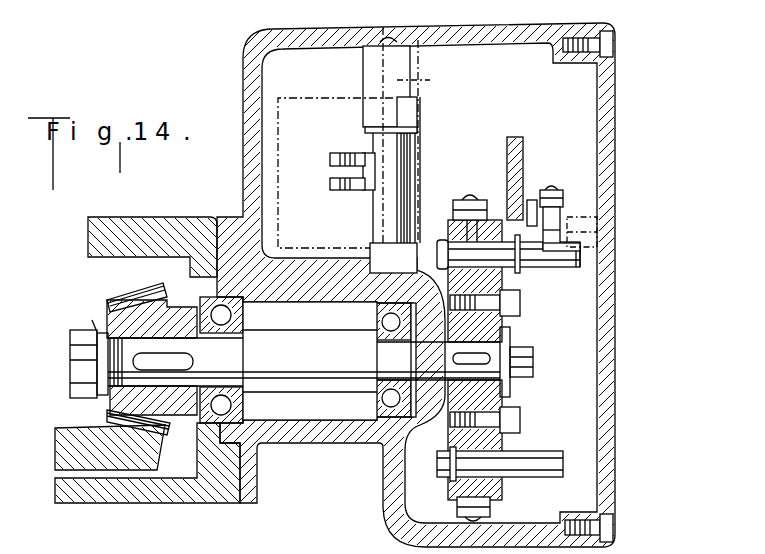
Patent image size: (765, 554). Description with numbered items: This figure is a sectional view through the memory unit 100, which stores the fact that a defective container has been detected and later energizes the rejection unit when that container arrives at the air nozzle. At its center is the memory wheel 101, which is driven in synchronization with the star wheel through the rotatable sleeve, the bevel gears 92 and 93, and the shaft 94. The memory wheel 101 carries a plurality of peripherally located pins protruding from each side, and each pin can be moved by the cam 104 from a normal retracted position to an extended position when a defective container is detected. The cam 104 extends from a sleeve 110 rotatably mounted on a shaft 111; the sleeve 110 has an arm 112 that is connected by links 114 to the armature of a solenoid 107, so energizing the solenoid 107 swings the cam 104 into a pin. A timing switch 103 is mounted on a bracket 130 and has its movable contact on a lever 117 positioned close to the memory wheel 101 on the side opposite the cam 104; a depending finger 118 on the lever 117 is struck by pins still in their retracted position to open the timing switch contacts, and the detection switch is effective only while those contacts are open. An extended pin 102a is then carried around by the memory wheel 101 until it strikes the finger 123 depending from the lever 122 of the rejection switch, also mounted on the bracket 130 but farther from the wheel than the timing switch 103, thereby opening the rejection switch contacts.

The bevel gear 92 is at (63, 430).
The bevel gear 93 is at (121, 299).
The shaft 94 is at (302, 392).
The memory unit 100 is at (645, 157).
The memory wheel 101 is at (502, 498).
The extended pin 102a is at (538, 272).
The timing switch 103 is at (565, 202).
The cam 104 is at (373, 250).
The solenoid 107 is at (305, 118).
The sleeve 110 is at (397, 208).
The shaft 111 is at (430, 82).
The arm 112 is at (374, 160).
The links 114 is at (331, 159).
The lever 117 is at (547, 190).
The depending finger 118 is at (582, 249).
The lever 122 is at (568, 219).
The finger 123 is at (598, 232).
The bracket 130 is at (515, 137).